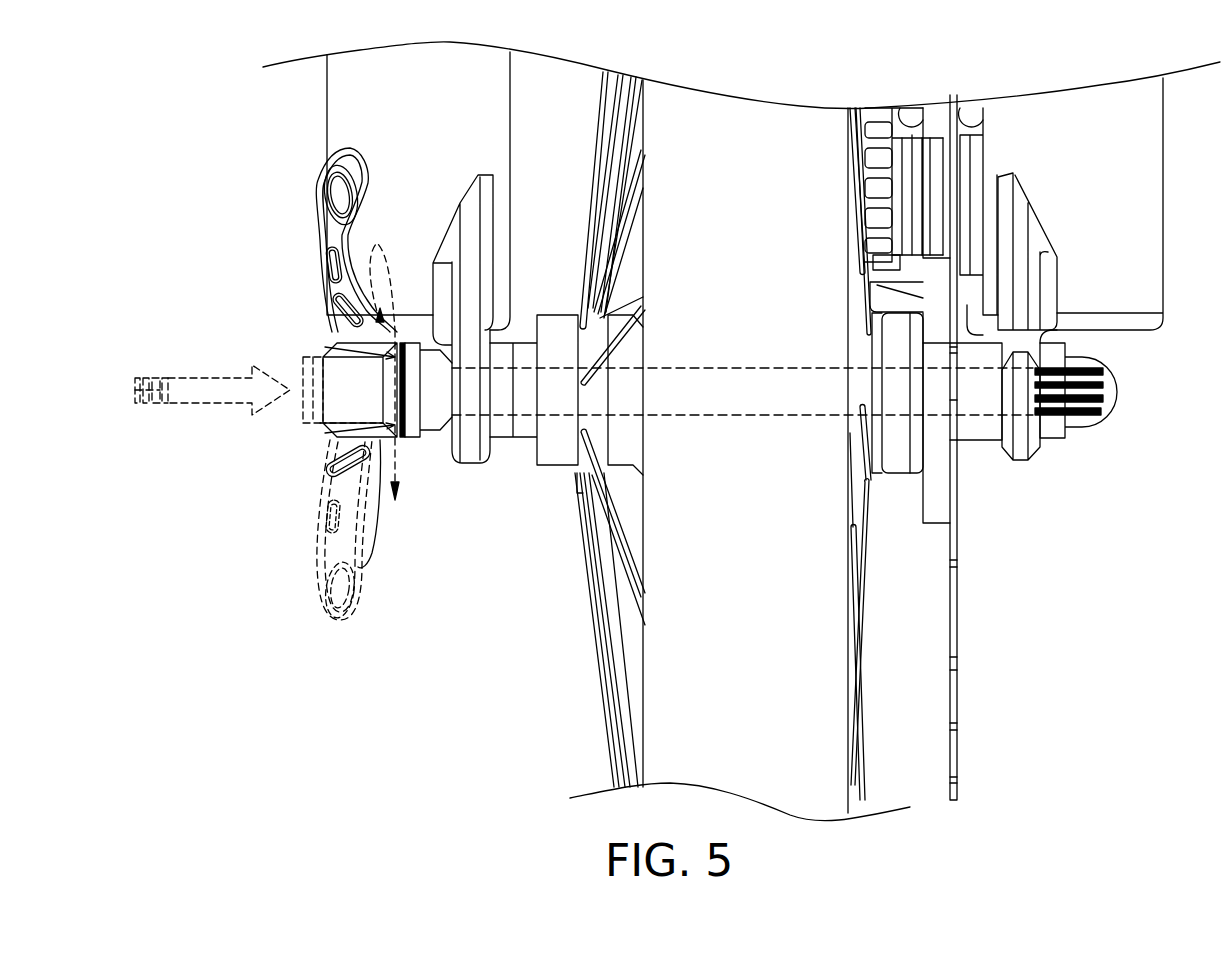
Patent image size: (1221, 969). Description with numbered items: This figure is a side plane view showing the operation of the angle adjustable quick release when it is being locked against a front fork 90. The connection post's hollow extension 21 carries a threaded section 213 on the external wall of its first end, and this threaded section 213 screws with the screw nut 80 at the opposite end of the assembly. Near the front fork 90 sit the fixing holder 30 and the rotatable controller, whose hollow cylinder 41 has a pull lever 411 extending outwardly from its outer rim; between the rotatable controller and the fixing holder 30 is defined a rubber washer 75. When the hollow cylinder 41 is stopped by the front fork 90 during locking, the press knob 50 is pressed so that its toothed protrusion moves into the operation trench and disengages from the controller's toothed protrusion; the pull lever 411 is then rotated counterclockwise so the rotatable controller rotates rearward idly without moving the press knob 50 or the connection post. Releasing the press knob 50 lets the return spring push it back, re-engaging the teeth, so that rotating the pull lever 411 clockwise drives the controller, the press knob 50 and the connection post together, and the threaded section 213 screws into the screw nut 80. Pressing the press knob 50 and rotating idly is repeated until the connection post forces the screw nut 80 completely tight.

The hollow extension 21 is at (742, 415).
The threaded section 213 is at (1087, 430).
The fixing holder 30 is at (448, 442).
The hollow cylinder 41 is at (347, 372).
The pull lever 411 is at (322, 207).
The press knob 50 is at (300, 372).
The rubber washer 75 is at (410, 437).
The screw nut 80 is at (1120, 388).
The front fork 90 is at (327, 118).